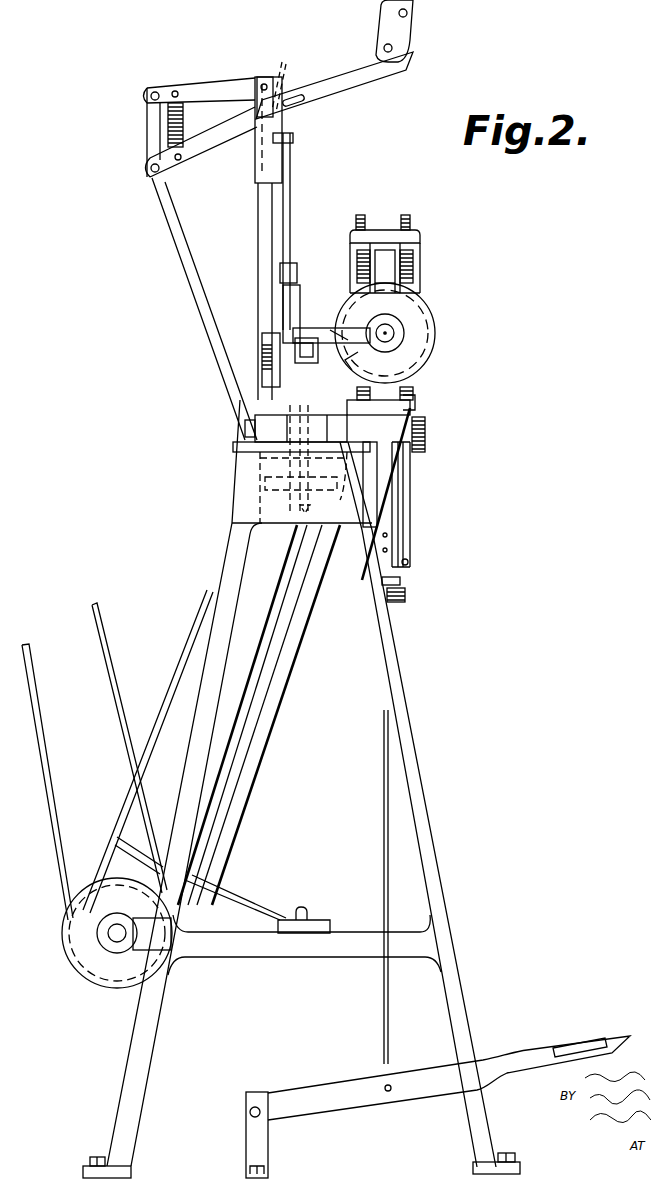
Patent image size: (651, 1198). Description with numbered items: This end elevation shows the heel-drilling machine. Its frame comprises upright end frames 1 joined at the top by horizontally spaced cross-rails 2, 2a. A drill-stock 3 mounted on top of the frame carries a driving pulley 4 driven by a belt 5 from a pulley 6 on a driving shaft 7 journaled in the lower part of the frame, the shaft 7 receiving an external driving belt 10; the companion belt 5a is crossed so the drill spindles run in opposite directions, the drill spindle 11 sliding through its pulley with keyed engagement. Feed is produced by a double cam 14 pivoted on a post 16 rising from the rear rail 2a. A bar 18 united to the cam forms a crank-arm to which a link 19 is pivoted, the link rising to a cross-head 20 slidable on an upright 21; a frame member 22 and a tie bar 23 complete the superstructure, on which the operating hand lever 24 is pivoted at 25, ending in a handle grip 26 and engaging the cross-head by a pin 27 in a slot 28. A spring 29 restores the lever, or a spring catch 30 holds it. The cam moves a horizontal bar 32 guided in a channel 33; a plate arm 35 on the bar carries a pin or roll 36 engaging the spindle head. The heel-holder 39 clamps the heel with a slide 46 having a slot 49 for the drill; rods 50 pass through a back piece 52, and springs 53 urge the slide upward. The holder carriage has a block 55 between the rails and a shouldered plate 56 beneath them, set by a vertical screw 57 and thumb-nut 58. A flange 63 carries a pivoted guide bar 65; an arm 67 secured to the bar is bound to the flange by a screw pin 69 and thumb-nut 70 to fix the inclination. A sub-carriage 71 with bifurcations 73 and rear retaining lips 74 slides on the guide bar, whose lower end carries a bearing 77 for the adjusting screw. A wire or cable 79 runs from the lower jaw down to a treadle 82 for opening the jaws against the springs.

The upright end frame 1 is at (366, 660).
The cross-rail 2 is at (336, 425).
The rear cross-rail 2a is at (262, 435).
The drill-stock 3 is at (325, 346).
The driving pulley 4 is at (418, 320).
The belt 5 is at (258, 765).
The crossed belt 5a is at (250, 640).
The pulley 6 is at (104, 975).
The driving shaft 7 is at (116, 933).
The external driving belt 10 is at (124, 748).
The drill spindle 11 is at (395, 335).
The double cam 14 is at (288, 305).
The post 16 is at (266, 338).
The bar 18 is at (280, 292).
The link 19 is at (292, 200).
The cross-head 20 is at (256, 163).
The upright 21 is at (262, 218).
The frame member 22 is at (205, 318).
The tie bar 23 is at (200, 72).
The operating hand lever 24 is at (350, 88).
The pivot 25 is at (150, 180).
The handle grip 26 is at (412, 24).
The pin 27 is at (280, 90).
The slot 28 is at (296, 106).
The spring 29 is at (148, 118).
The spring catch 30 is at (254, 80).
The horizontal bar 32 is at (298, 348).
The horizontal channel 33 is at (306, 358).
The plate arm 35 is at (358, 335).
The pin or roll 36 is at (368, 332).
The heel-holder 39 is at (378, 232).
The slide 46 is at (396, 262).
The longitudinal slot 49 is at (408, 284).
The rod 50 is at (412, 222).
The back piece 52 is at (420, 240).
The spring 53 is at (356, 270).
The block 55 is at (262, 458).
The shouldered plate 56 is at (342, 488).
The vertical screw 57 is at (302, 494).
The thumb-nut 58 is at (265, 485).
The flange 63 is at (392, 476).
The guide bar 65 is at (398, 580).
The arm 67 is at (406, 506).
The screw pin 69 is at (426, 432).
The thumb-nut 70 is at (414, 408).
The sub-carriage 71 is at (412, 535).
The bifurcations 73 is at (404, 456).
The rear retaining lip 74 is at (410, 558).
The bearing 77 is at (410, 606).
The wire or cable 79 is at (384, 800).
The treadle 82 is at (560, 1046).